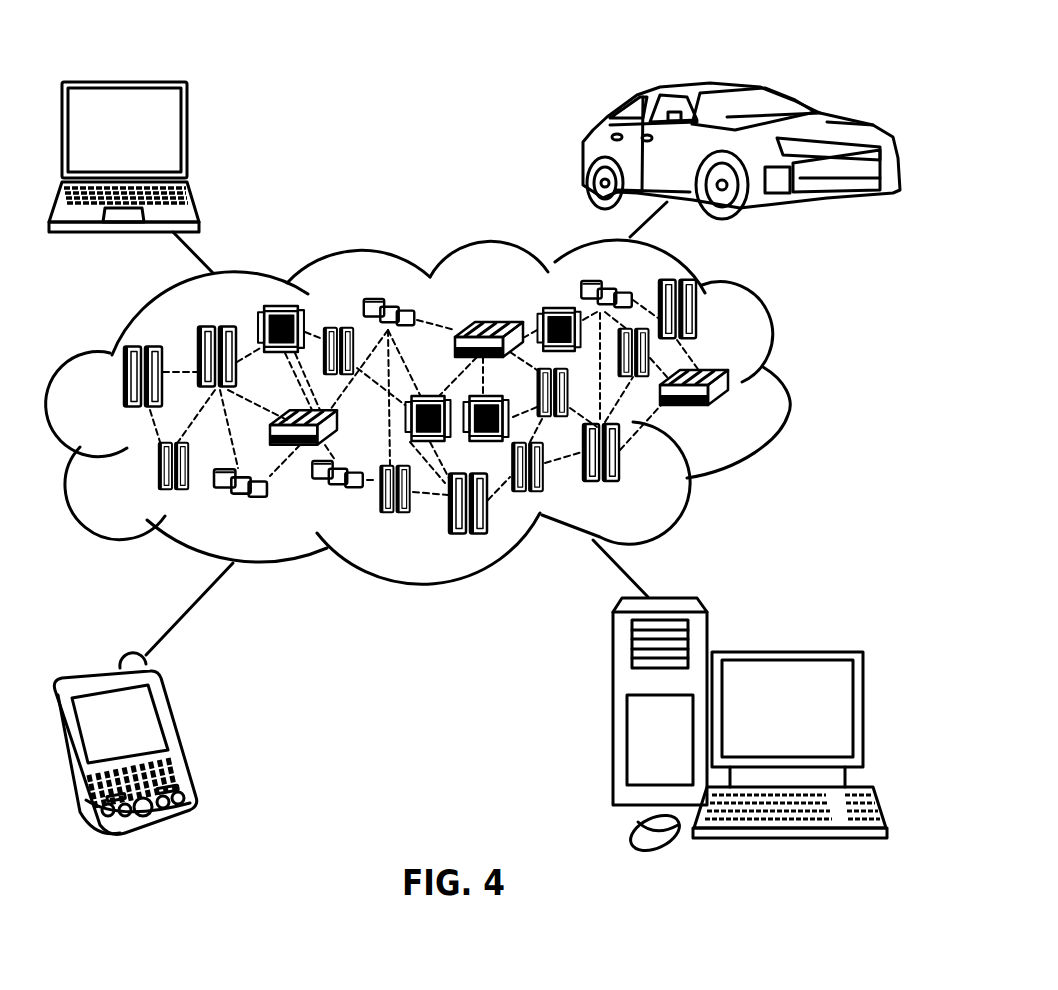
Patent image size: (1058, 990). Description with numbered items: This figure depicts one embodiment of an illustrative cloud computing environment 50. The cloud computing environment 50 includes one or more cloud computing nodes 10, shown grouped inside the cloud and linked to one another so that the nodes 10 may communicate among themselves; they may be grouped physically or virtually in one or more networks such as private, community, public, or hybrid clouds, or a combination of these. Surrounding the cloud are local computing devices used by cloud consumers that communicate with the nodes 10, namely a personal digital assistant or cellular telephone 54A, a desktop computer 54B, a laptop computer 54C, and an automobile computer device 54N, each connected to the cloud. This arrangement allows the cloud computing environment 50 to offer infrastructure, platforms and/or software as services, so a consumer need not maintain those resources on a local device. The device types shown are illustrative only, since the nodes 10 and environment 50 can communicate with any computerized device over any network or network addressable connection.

The cloud computing node 10 is at (745, 419).
The cloud computing environment 50 is at (783, 387).
The personal digital assistant or cellular telephone 54A is at (179, 731).
The desktop computer 54B is at (785, 652).
The laptop computer 54C is at (188, 139).
The automobile computer device 54N is at (586, 151).